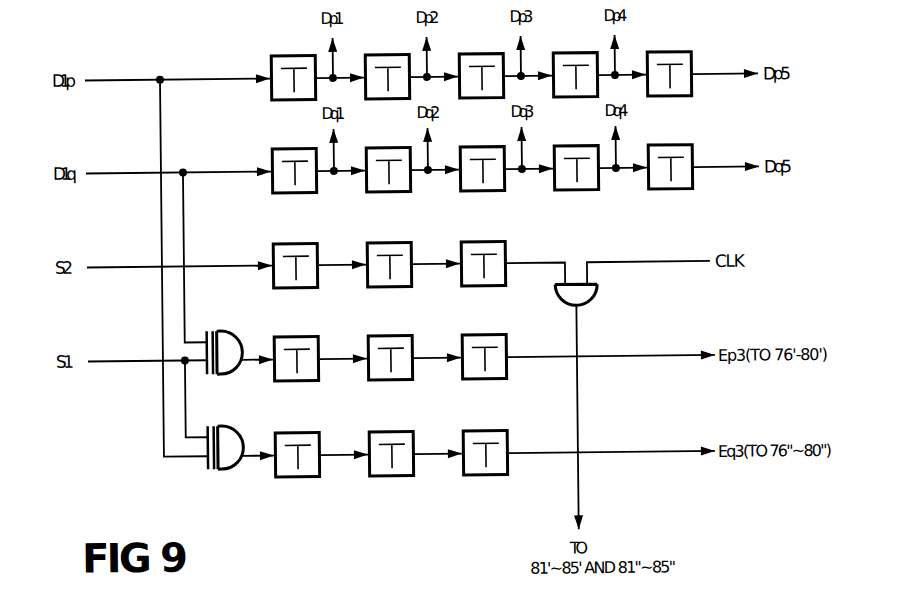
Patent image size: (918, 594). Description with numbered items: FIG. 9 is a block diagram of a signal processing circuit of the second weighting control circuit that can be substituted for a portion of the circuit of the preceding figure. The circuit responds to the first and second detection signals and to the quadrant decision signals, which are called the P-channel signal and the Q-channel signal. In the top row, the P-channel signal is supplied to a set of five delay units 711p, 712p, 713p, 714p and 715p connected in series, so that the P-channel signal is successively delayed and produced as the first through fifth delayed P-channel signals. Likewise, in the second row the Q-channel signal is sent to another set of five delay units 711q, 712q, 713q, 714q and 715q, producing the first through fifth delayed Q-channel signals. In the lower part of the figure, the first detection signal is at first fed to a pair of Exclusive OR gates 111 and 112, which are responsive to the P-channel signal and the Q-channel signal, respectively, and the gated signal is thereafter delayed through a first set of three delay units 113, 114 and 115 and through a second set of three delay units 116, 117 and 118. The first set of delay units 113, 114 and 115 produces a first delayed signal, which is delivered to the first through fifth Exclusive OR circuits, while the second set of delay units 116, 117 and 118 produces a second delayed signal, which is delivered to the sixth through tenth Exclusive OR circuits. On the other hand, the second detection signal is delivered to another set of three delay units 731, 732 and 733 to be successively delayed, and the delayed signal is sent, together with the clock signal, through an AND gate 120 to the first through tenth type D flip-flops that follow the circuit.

The delay unit 711p is at (286, 61).
The delay unit 712p is at (380, 60).
The delay unit 713p is at (474, 59).
The delay unit 714p is at (568, 58).
The delay unit 715p is at (662, 57).
The delay unit 711q is at (287, 154).
The delay unit 712q is at (381, 153).
The delay unit 713q is at (475, 152).
The delay unit 714q is at (569, 151).
The delay unit 715q is at (663, 150).
The delay unit 731 is at (289, 249).
The delay unit 732 is at (383, 248).
The delay unit 733 is at (477, 247).
The Exclusive OR gate 111 is at (232, 421).
The Exclusive OR gate 112 is at (227, 329).
The delay unit 113 is at (291, 438).
The delay unit 114 is at (385, 437).
The delay unit 115 is at (479, 436).
The delay unit 116 is at (290, 342).
The delay unit 117 is at (384, 341).
The delay unit 118 is at (478, 340).
The AND gate 120 is at (595, 300).